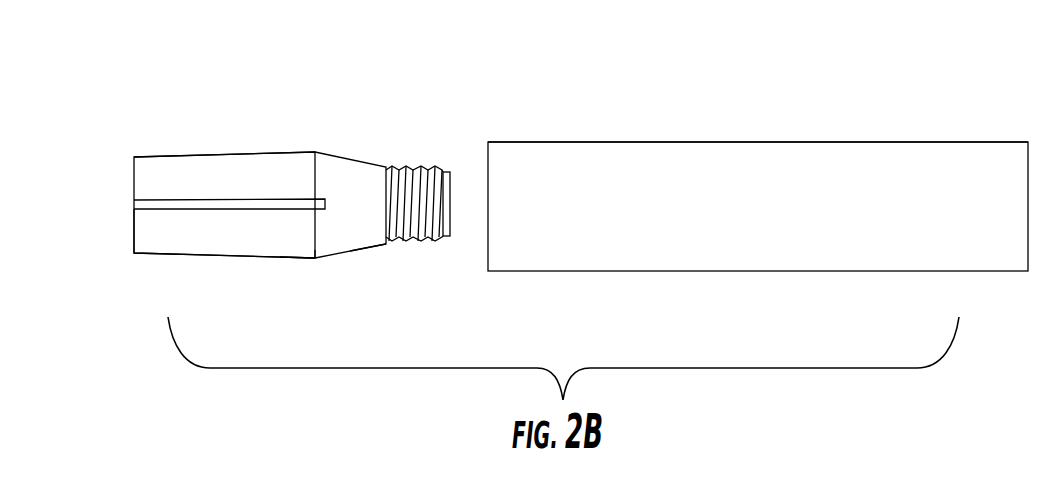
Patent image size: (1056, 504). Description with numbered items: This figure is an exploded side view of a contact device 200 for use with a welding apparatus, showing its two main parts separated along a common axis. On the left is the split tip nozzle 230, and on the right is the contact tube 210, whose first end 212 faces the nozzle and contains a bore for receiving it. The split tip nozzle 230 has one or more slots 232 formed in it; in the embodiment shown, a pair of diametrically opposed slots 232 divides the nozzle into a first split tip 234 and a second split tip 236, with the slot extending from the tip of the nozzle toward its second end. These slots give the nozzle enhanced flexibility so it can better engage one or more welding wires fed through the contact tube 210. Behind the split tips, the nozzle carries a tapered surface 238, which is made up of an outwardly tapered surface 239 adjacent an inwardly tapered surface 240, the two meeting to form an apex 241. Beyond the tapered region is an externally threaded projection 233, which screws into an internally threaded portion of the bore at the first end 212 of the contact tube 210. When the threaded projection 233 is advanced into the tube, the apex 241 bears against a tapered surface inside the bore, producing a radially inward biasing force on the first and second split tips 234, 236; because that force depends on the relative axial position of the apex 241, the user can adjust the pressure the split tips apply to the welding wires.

The contact device 200 is at (210, 64).
The contact tube 210 is at (1000, 142).
The first end 212 is at (514, 142).
The split tip nozzle 230 is at (178, 165).
The slots 232 is at (240, 212).
The externally threaded projection 233 is at (425, 167).
The first split tip 234 is at (240, 174).
The second split tip 236 is at (165, 243).
The tapered surface 238 is at (320, 152).
The outwardly tapered surface 239 is at (366, 249).
The inwardly tapered surface 240 is at (298, 260).
The apex 241 is at (322, 262).